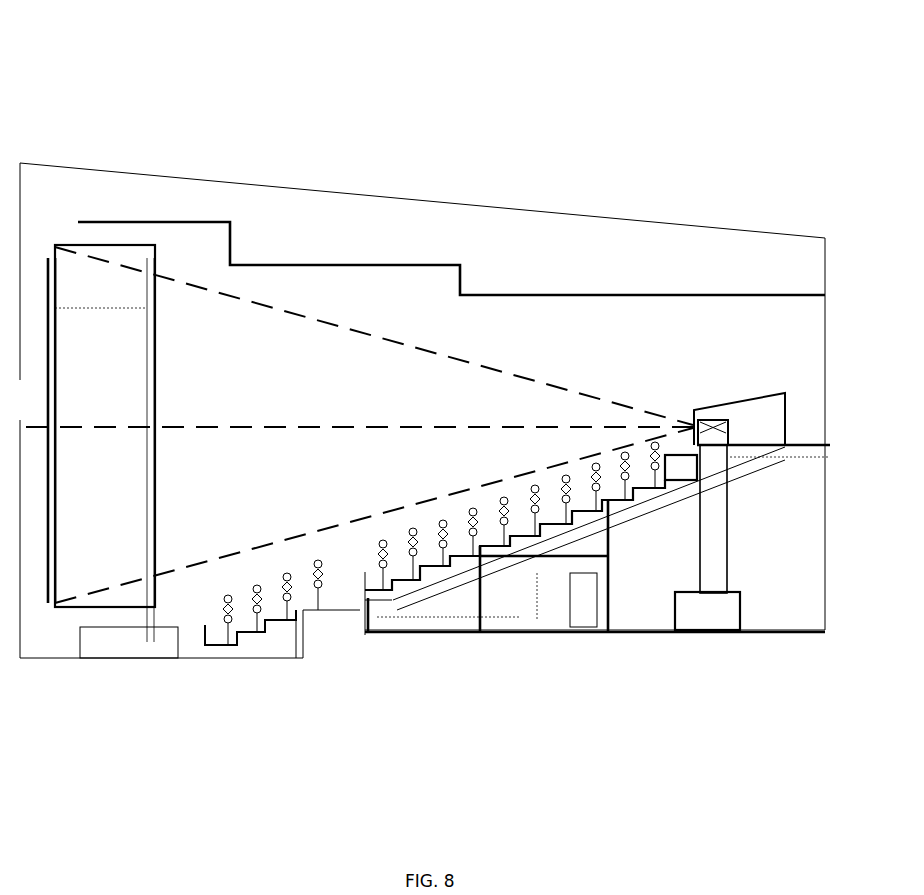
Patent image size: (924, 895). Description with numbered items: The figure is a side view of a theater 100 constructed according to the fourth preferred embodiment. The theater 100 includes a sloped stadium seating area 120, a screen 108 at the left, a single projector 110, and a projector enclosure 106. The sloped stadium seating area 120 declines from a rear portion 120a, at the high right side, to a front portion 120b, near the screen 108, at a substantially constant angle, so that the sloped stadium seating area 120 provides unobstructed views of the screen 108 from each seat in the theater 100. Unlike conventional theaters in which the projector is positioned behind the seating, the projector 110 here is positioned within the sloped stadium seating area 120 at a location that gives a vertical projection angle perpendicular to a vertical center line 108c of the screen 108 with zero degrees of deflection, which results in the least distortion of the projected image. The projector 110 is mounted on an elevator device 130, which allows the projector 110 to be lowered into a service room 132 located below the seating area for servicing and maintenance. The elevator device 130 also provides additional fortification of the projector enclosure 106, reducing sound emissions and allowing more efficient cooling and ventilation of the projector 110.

The theater 100 is at (330, 218).
The projector enclosure 106 is at (752, 405).
The screen 108 is at (132, 288).
The vertical center line 108c is at (55, 427).
The projector 110 is at (713, 420).
The sloped stadium seating area 120 is at (435, 575).
The rear portion 120a is at (788, 445).
The front portion 120b is at (205, 645).
The elevator device 130 is at (727, 533).
The service room 132 is at (637, 590).